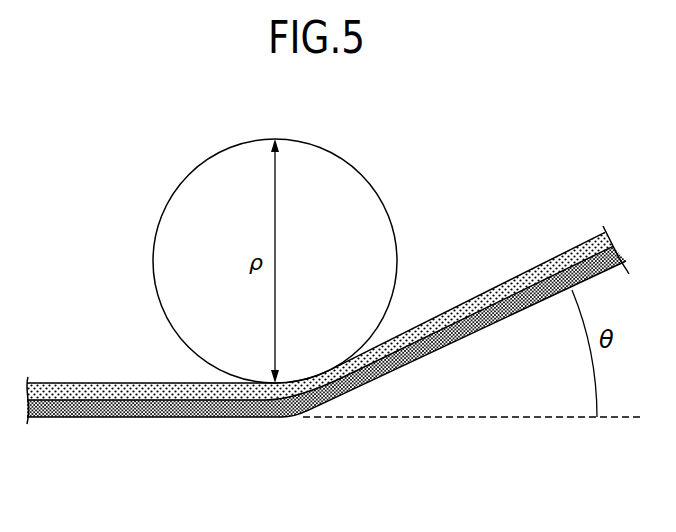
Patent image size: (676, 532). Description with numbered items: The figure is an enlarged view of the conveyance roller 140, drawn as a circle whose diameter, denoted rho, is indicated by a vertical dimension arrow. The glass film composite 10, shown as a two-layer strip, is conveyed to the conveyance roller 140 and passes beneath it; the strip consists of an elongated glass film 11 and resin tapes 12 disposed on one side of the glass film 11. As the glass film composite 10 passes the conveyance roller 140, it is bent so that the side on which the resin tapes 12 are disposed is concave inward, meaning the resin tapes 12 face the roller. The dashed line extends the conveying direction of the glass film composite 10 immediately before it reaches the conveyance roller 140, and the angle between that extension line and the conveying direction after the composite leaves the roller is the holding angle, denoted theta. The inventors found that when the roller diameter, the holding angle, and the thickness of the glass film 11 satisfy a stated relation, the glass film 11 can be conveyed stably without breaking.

The glass film composite 10 is at (328, 373).
The glass film 11 is at (143, 410).
The resin tapes 12 is at (108, 392).
The conveyance roller 140 is at (238, 162).